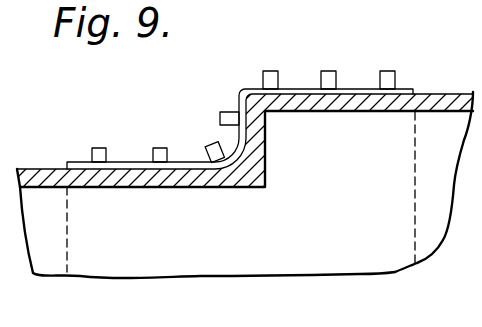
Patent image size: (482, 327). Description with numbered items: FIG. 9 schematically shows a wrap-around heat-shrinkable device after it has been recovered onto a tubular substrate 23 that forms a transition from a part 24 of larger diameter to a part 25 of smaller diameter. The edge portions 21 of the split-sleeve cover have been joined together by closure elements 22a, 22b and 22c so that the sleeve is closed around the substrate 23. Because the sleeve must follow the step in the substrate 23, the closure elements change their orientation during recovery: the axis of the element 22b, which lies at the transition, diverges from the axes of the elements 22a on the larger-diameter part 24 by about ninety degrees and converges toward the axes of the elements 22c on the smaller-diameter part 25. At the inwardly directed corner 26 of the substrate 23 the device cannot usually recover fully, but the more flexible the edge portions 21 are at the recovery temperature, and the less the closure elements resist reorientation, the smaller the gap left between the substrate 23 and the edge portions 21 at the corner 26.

The edge portions 21 is at (78, 162).
The closure elements 22a is at (386, 70).
The closure element 22b is at (220, 118).
The closure elements 22c is at (212, 145).
The tubular substrate 23 is at (33, 178).
The part of larger diameter 24 is at (429, 231).
The part of smaller diameter 25 is at (49, 247).
The inwardly directed corner 26 is at (247, 190).